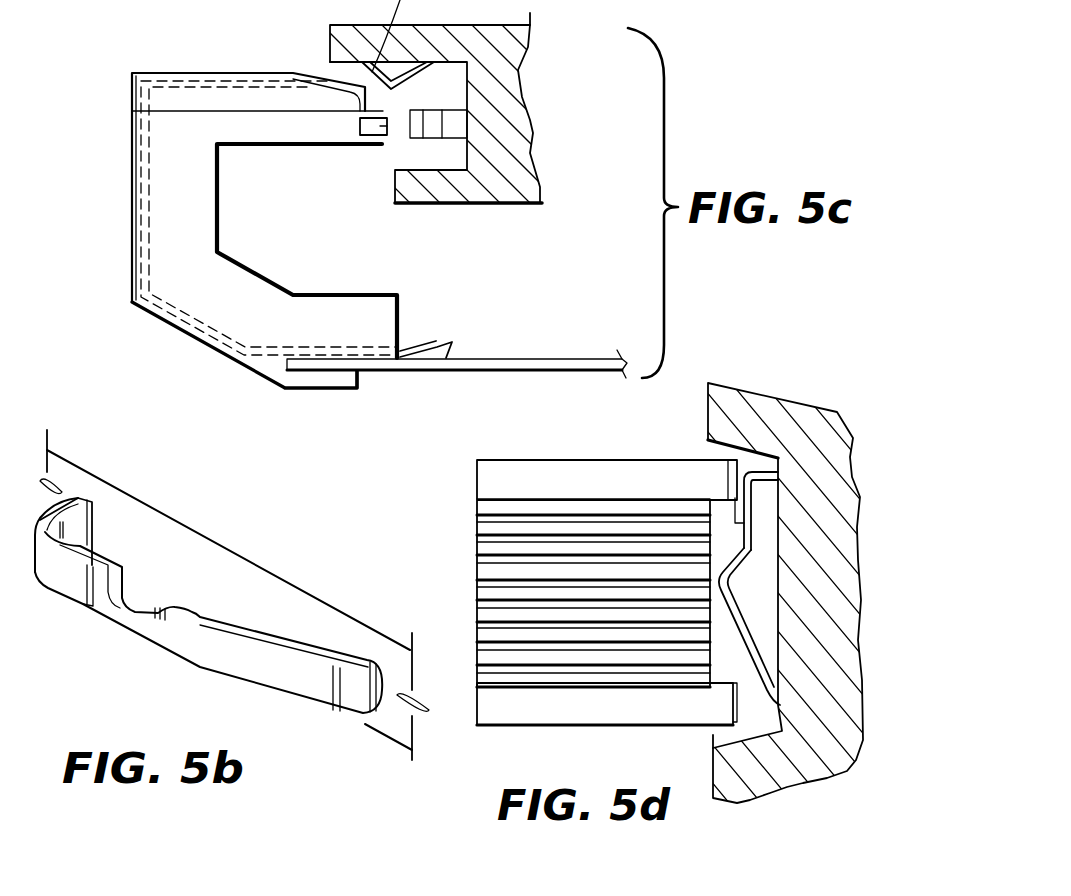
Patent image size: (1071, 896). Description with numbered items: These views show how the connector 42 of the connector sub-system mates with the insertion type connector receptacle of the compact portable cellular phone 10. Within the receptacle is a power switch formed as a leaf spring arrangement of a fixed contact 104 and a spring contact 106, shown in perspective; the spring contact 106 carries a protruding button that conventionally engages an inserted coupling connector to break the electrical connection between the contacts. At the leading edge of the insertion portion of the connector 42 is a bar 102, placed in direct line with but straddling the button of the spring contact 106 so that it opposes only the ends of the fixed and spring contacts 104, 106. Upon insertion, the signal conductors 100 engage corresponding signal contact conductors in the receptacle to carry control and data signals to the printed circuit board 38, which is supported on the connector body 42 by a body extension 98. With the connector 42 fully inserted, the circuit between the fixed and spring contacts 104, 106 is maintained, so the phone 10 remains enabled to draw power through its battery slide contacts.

In FIG. 5c, the phone 10 is at (513, 107).
In FIG. 5d, the phone 10 is at (750, 395).
In FIG. 5c, the printed circuit board 38 is at (540, 362).
In FIG. 5c, the connector 42 is at (207, 232).
In FIG. 5d, the connector 42 is at (492, 480).
In FIG. 5c, the body extension 98 is at (317, 378).
In FIG. 5c, the signal conductors 100 is at (130, 160).
In FIG. 5c, the bar 102 is at (400, 126).
In FIG. 5d, the bar 102 is at (738, 703).
In FIG. 5b, the fixed contact 104 is at (67, 582).
In FIG. 5c, the fixed contact 104 is at (398, 75).
In FIG. 5d, the fixed contact 104 is at (760, 476).
In FIG. 5b, the spring contact 106 is at (247, 667).
In FIG. 5c, the spring contact 106 is at (455, 125).
In FIG. 5d, the spring contact 106 is at (770, 670).